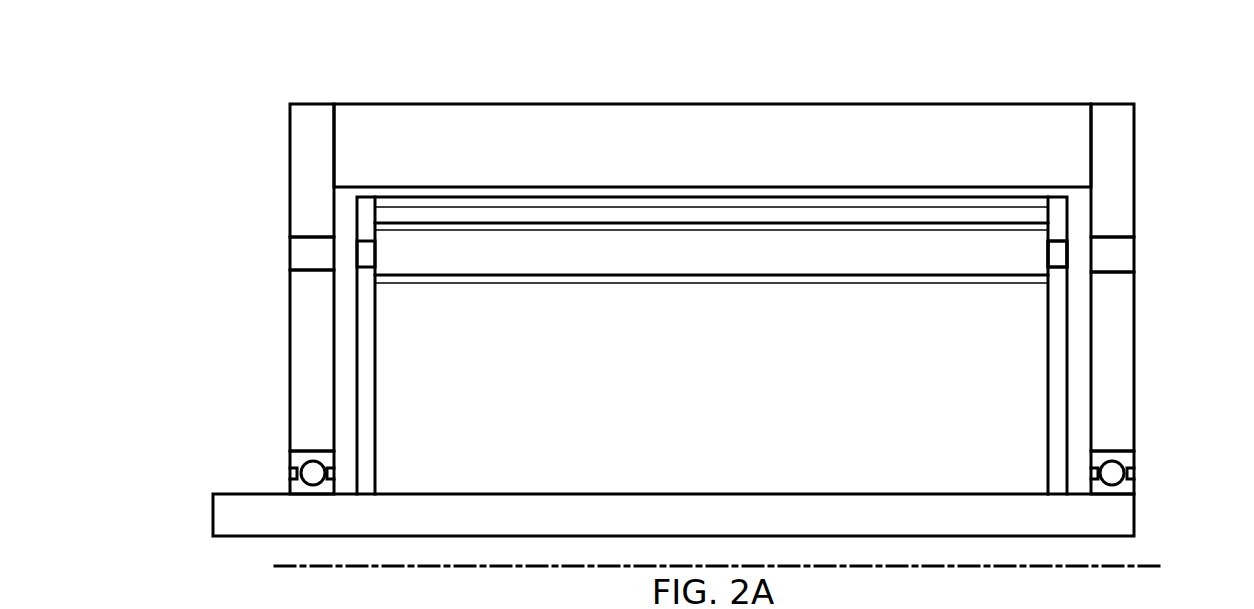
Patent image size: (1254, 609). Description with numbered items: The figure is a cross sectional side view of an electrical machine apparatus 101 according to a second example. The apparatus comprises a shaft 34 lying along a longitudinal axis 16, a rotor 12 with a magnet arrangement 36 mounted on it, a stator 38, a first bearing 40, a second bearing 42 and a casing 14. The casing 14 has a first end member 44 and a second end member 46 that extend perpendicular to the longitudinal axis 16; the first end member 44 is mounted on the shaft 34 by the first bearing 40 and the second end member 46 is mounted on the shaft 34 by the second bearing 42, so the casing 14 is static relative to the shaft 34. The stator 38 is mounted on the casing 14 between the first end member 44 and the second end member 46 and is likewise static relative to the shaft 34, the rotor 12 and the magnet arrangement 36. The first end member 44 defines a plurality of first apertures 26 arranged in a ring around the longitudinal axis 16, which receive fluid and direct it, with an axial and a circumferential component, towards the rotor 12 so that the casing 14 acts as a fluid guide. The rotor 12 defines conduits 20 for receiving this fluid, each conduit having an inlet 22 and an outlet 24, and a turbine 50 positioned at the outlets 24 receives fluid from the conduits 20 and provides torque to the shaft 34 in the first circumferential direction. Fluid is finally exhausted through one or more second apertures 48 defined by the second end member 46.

The electrical machine apparatus 101 is at (206, 138).
The rotor 12 is at (370, 437).
The casing 14 is at (312, 343).
The longitudinal axis 16 is at (1157, 565).
The conduits 20 is at (590, 255).
The inlet 22 is at (367, 253).
The outlet 24 is at (1058, 248).
The first apertures 26 is at (312, 253).
The shaft 34 is at (222, 516).
The magnet arrangement 36 is at (747, 213).
The stator 38 is at (730, 160).
The first bearing 40 is at (273, 469).
The second bearing 42 is at (1159, 469).
The first end member 44 is at (310, 95).
The second end member 46 is at (1115, 95).
The second apertures 48 is at (1123, 253).
The turbine 50 is at (1060, 250).